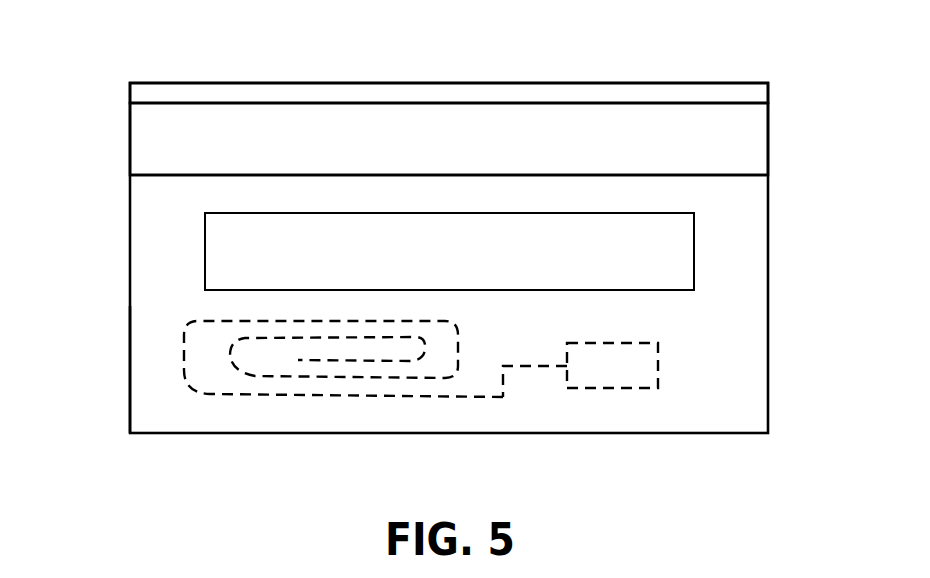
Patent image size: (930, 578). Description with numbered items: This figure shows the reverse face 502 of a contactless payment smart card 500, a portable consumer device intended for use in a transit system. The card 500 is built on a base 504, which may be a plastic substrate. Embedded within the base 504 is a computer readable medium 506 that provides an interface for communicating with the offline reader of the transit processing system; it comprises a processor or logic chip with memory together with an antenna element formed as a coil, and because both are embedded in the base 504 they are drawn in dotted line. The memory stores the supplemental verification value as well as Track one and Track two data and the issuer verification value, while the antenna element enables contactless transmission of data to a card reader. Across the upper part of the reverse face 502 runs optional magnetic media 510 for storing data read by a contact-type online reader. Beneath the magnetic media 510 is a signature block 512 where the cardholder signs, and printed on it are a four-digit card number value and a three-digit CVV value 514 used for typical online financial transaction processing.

The contactless payment smart card 500 is at (103, 453).
The reverse face 502 is at (160, 306).
The base 504 is at (695, 82).
The computer readable medium 506 is at (355, 405).
The magnetic media 510 is at (155, 153).
The signature block 512 is at (220, 247).
The CVV value 514 is at (657, 270).